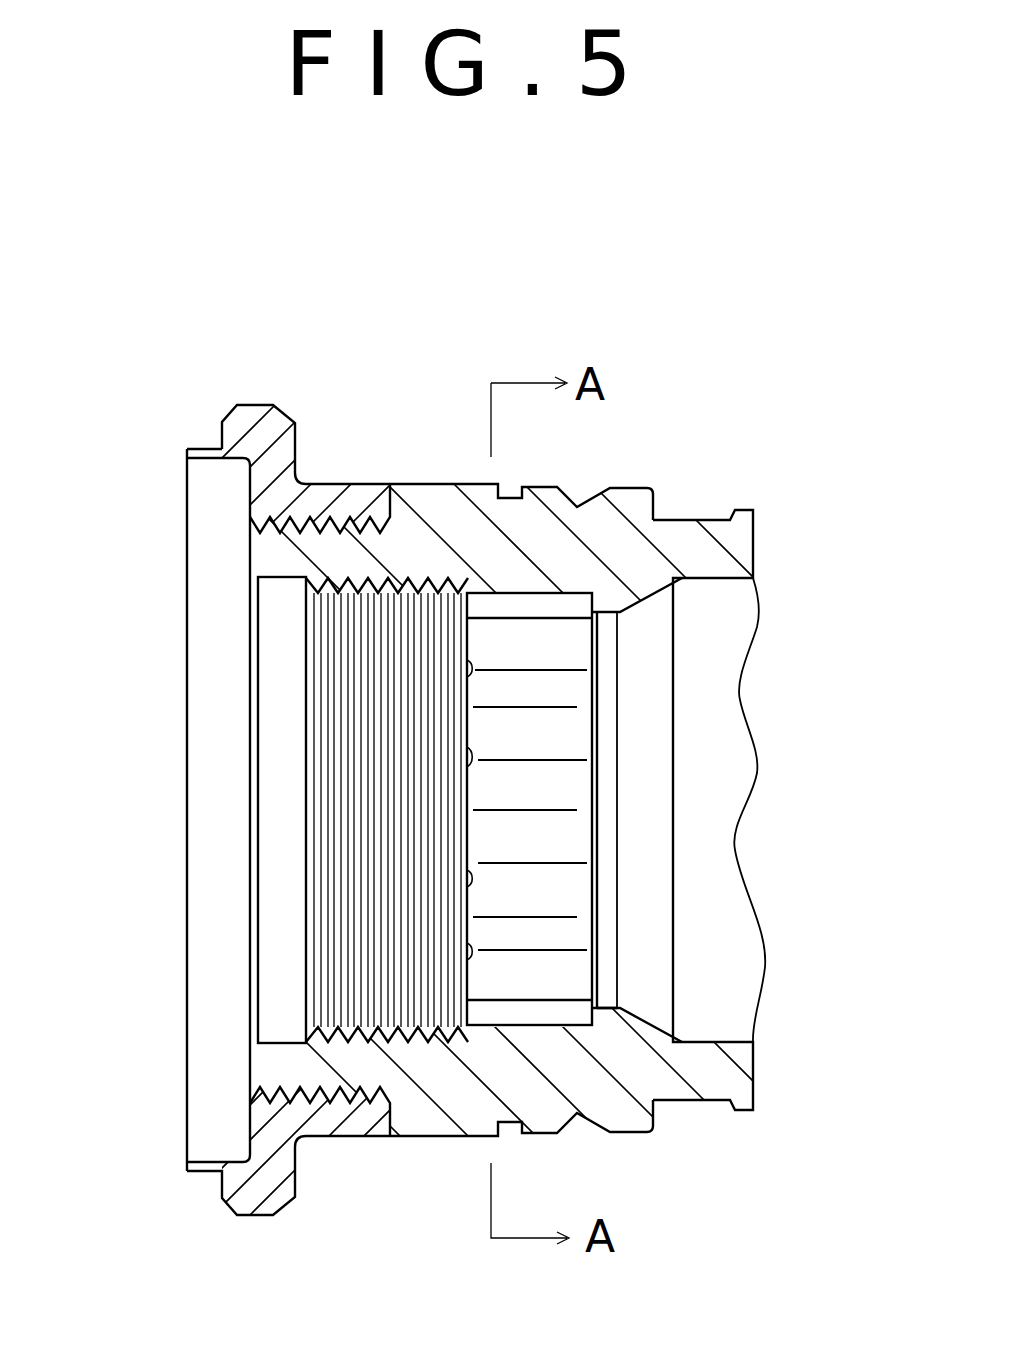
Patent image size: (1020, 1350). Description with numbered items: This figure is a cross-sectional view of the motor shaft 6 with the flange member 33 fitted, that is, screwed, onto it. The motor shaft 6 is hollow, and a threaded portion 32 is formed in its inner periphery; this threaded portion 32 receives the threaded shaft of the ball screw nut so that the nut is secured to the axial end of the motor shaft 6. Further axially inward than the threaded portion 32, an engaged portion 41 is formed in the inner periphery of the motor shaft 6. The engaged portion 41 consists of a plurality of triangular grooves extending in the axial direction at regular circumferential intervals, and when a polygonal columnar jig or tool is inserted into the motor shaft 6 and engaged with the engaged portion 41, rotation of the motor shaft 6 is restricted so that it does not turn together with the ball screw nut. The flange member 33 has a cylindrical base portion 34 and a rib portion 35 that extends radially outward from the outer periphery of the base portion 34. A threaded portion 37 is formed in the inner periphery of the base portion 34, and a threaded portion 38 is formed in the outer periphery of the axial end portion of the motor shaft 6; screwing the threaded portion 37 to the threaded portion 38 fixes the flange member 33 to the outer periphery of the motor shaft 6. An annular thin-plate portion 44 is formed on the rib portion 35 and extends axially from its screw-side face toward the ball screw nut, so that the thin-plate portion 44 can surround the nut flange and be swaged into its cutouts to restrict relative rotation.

The motor shaft 6 is at (657, 505).
The threaded portion 32 is at (337, 860).
The flange member 33 is at (307, 433).
The base portion 34 is at (320, 468).
The rib portion 35 is at (285, 418).
The threaded portion 37 is at (322, 1112).
The threaded portion 38 is at (293, 1084).
The engaged portion 41 is at (553, 978).
The thin-plate portion 44 is at (198, 449).